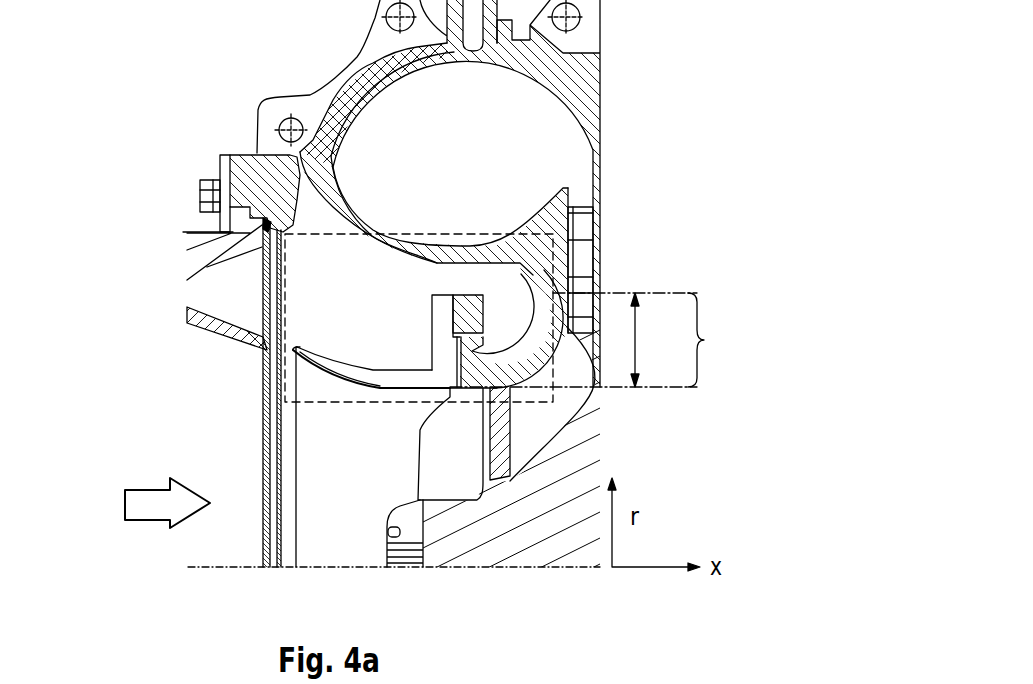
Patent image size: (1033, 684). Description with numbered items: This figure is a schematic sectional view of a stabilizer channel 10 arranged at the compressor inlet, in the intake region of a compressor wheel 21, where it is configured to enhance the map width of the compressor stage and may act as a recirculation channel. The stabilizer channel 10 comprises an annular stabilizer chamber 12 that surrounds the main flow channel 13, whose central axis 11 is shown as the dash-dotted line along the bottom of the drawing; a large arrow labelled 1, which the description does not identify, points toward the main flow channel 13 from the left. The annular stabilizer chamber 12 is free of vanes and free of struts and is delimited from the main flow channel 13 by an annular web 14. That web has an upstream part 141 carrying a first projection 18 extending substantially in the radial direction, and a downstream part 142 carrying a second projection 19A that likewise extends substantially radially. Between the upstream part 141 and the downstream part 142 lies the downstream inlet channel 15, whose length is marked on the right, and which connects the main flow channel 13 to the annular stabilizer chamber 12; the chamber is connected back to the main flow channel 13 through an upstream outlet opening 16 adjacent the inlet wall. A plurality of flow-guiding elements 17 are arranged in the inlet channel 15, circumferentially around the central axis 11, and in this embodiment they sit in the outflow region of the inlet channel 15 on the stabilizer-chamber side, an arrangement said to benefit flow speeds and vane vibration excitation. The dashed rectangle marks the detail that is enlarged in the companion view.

The exhaust gas flow direction 1 is at (184, 513).
The stabilizer channel 10 is at (295, 228).
The central axis 11 is at (296, 568).
The annular stabilizer chamber 12 is at (348, 286).
The main flow channel 13 is at (335, 475).
The annular web 14 is at (417, 361).
The upstream part of the annular web 141 is at (347, 373).
The downstream part of the annular web 142 is at (523, 347).
The inlet channel of the stabilizer chamber 15 is at (592, 340).
The outlet opening of the stabilizer chamber 16 is at (271, 343).
The flow-guiding elements 17 is at (461, 333).
The first projection which extends substantially in the radial direction 18 is at (438, 301).
The second projection which extends substantially in the radial direction 19A is at (470, 332).
The compressor wheel 21 is at (530, 553).